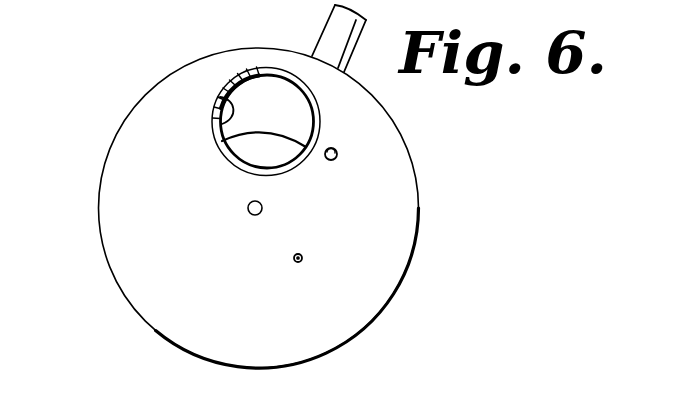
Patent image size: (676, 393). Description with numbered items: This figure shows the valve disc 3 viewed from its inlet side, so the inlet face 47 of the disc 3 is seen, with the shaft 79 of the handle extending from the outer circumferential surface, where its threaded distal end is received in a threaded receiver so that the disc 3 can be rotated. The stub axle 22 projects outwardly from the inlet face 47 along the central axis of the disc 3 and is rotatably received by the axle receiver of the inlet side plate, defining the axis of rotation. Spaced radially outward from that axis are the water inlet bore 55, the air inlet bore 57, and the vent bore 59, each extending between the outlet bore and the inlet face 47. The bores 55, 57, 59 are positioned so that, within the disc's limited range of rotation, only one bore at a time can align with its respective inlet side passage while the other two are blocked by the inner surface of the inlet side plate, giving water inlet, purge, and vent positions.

The disc 3 is at (95, 78).
The shaft 79 is at (325, 27).
The water inlet bore 55 is at (222, 98).
The air inlet bore 57 is at (331, 160).
The stub axle 22 is at (262, 208).
The vent bore 59 is at (301, 255).
The inlet face 47 is at (257, 306).